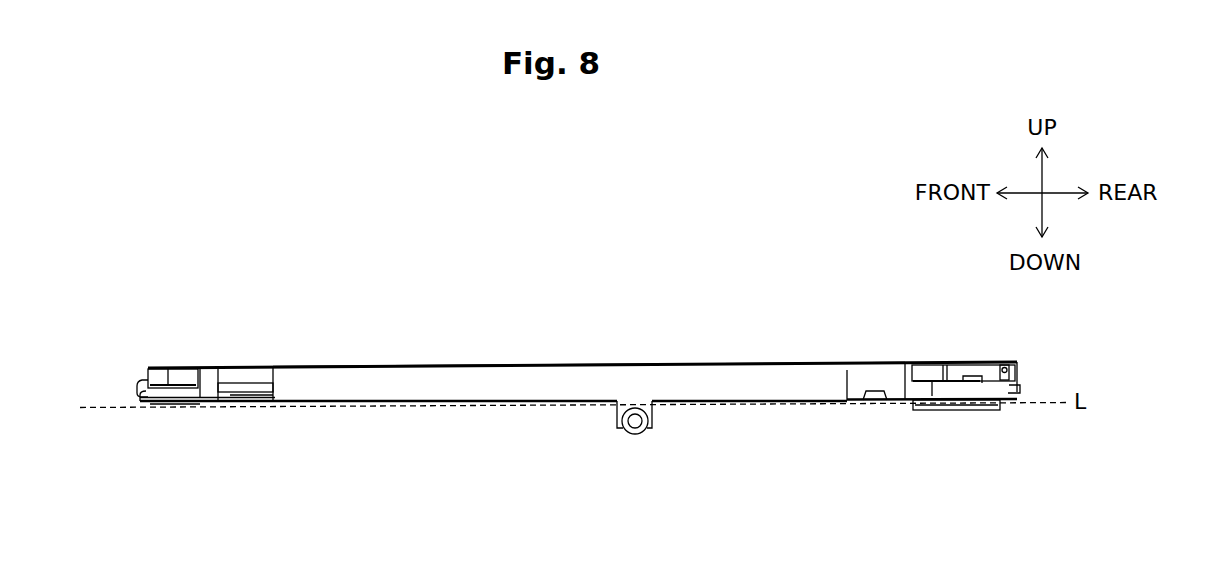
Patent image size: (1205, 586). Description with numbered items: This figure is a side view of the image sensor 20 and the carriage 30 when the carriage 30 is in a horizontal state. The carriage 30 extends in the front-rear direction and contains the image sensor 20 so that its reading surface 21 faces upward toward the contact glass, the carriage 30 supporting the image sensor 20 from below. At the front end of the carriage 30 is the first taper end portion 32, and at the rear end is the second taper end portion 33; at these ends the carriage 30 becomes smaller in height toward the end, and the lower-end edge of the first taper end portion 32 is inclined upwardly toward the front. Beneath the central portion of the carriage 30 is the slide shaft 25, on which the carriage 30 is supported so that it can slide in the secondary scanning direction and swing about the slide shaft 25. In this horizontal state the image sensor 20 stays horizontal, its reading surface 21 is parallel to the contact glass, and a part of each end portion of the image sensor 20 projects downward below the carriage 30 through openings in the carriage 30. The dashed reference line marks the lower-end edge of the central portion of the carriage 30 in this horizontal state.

The image sensor 20 is at (183, 374).
The reading surface 21 is at (665, 363).
The slide shaft 25 is at (633, 440).
The carriage 30 is at (524, 386).
The first taper end portion 32 is at (139, 388).
The second taper end portion 33 is at (1026, 383).